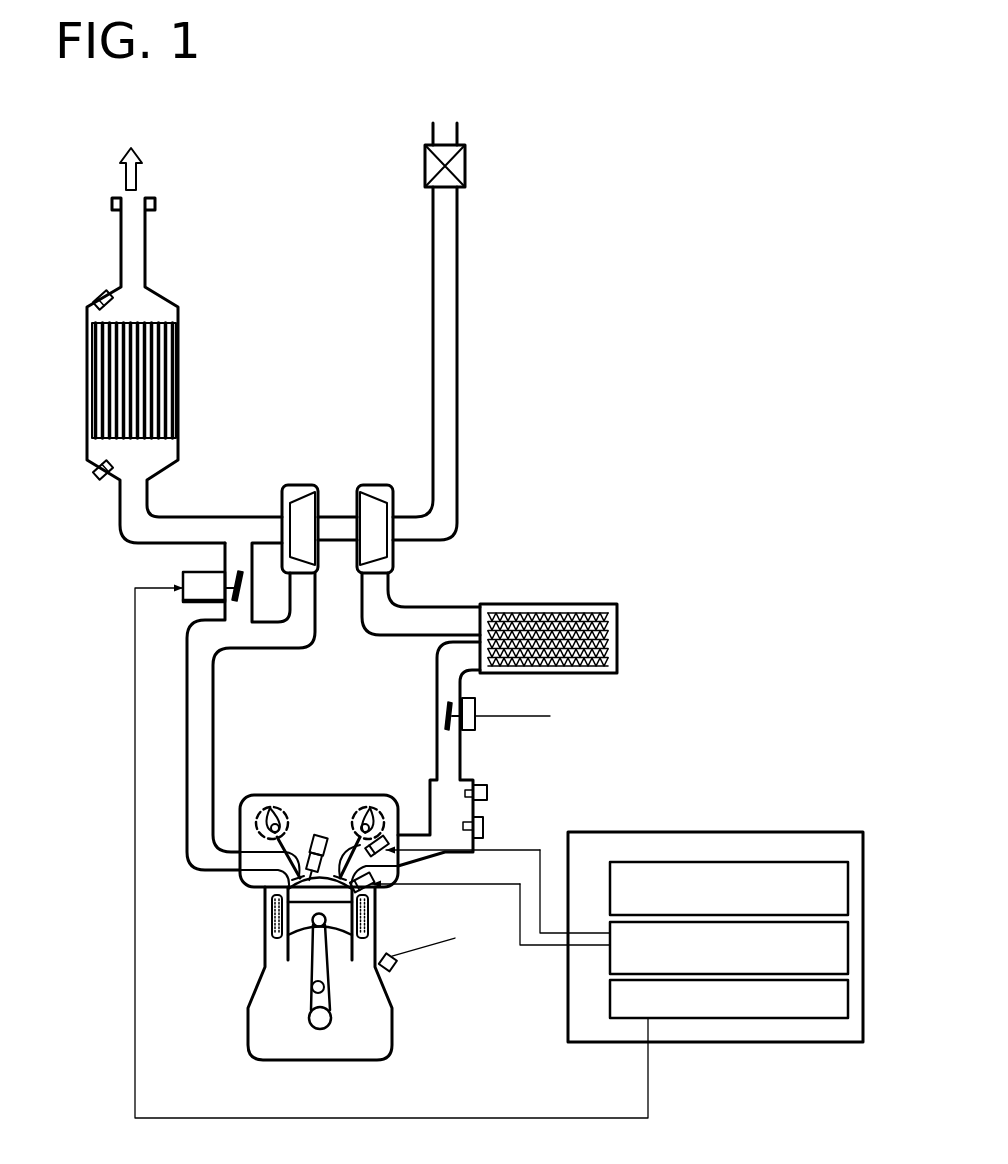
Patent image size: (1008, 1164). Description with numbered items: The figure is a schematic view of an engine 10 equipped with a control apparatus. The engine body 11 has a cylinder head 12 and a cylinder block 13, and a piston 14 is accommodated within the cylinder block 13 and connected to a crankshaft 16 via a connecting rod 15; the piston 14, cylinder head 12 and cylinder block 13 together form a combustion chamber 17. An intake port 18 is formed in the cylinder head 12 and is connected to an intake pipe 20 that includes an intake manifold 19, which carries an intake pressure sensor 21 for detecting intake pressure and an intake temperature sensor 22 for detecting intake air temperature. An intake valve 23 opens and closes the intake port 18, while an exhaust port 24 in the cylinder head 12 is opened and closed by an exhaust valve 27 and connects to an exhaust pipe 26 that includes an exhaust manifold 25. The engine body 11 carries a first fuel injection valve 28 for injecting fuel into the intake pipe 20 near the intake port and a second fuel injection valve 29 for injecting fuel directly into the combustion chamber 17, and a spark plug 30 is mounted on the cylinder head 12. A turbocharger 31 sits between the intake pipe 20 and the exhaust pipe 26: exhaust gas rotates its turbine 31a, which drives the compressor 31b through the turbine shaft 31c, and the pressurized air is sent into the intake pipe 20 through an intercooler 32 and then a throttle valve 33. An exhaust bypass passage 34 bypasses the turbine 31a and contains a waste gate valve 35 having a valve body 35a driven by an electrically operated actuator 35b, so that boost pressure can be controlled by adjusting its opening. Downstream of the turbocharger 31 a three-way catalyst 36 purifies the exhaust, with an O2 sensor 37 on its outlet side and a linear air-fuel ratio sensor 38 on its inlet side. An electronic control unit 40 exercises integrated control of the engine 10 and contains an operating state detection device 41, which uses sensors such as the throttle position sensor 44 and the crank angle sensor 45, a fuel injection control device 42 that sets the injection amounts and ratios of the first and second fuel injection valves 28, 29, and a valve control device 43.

The engine 10 is at (613, 297).
The engine body 11 is at (337, 740).
The cylinder head 12 is at (248, 797).
The cylinder block 13 is at (265, 986).
The piston 14 is at (295, 920).
The connecting rod 15 is at (316, 968).
The crankshaft 16 is at (315, 1027).
The combustion chamber 17 is at (297, 895).
The intake port 18 is at (340, 810).
The intake manifold 19 is at (455, 808).
The intake pipe 20 is at (445, 440).
The intake pressure sensor 21 is at (486, 830).
The intake temperature sensor 22 is at (490, 795).
The intake valve 23 is at (362, 810).
The exhaust port 24 is at (300, 810).
The exhaust manifold 25 is at (260, 858).
The exhaust pipe 26 is at (200, 525).
The exhaust valve 27 is at (296, 879).
The first fuel injection valve 28 is at (405, 808).
The second fuel injection valve 29 is at (373, 893).
The spark plug 30 is at (313, 835).
The turbocharger 31 is at (341, 460).
The turbine 31a is at (300, 500).
The compressor 31b is at (377, 500).
The turbine shaft 31c is at (333, 500).
The intercooler 32 is at (592, 604).
The throttle valve 33 is at (446, 716).
The exhaust bypass passage 34 is at (235, 565).
The waste gate valve 35 is at (87, 565).
The valve body 35a is at (222, 600).
The electrically operated actuator 35b is at (200, 578).
The three-way catalyst 36 is at (158, 364).
The O2 sensor 37 is at (98, 292).
The linear air-fuel ratio sensor 38 is at (100, 482).
The electronic control unit 40 is at (773, 832).
The operating state detection device 41 is at (690, 862).
The fuel injection control device 42 is at (610, 952).
The valve control device 43 is at (610, 995).
The throttle position sensor 44 is at (478, 708).
The crank angle sensor 45 is at (393, 972).